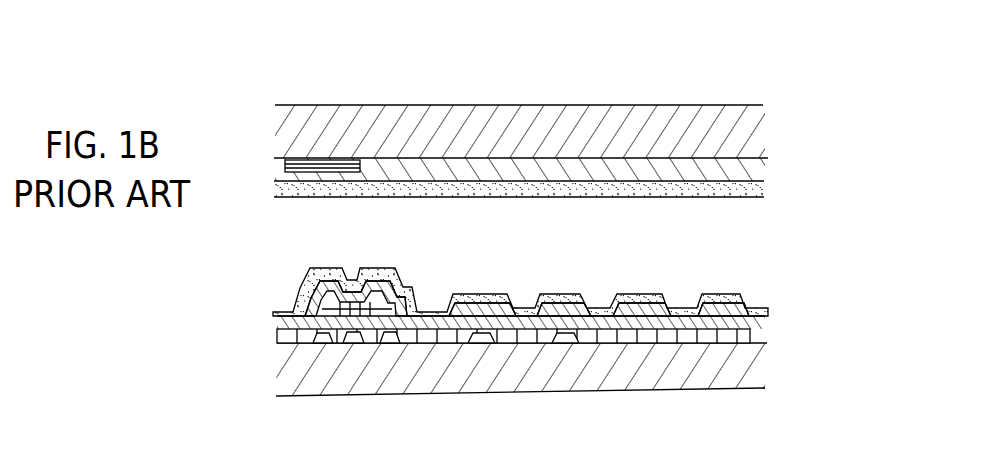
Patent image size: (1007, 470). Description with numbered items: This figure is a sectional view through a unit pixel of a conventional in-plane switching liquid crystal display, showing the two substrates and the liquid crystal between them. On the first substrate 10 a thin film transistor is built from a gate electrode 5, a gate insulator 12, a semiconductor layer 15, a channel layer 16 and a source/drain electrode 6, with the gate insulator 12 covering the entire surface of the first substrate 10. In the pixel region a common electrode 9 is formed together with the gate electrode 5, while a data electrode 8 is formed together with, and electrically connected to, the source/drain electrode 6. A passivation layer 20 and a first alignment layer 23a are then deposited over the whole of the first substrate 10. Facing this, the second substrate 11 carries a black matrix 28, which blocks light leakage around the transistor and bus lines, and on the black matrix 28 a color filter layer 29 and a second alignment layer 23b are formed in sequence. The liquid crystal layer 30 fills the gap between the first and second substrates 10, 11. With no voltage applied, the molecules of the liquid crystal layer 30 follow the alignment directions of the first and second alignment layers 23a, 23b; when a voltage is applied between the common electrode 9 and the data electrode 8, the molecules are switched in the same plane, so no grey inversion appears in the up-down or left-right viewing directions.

The gate electrode 5 is at (348, 344).
The source/drain electrode 6 is at (387, 350).
The data electrode 8 is at (560, 344).
The common electrode 9 is at (486, 344).
The first substrate 10 is at (735, 372).
The second substrate 11 is at (723, 117).
The gate insulator 12 is at (750, 332).
The semiconductor layer 15 is at (320, 344).
The channel layer 16 is at (388, 344).
The passivation layer 20 is at (765, 323).
The first alignment layer 23a is at (740, 298).
The second alignment layer 23b is at (758, 205).
The black matrix 28 is at (332, 158).
The color filter layer 29 is at (742, 166).
The liquid crystal layer 30 is at (248, 247).